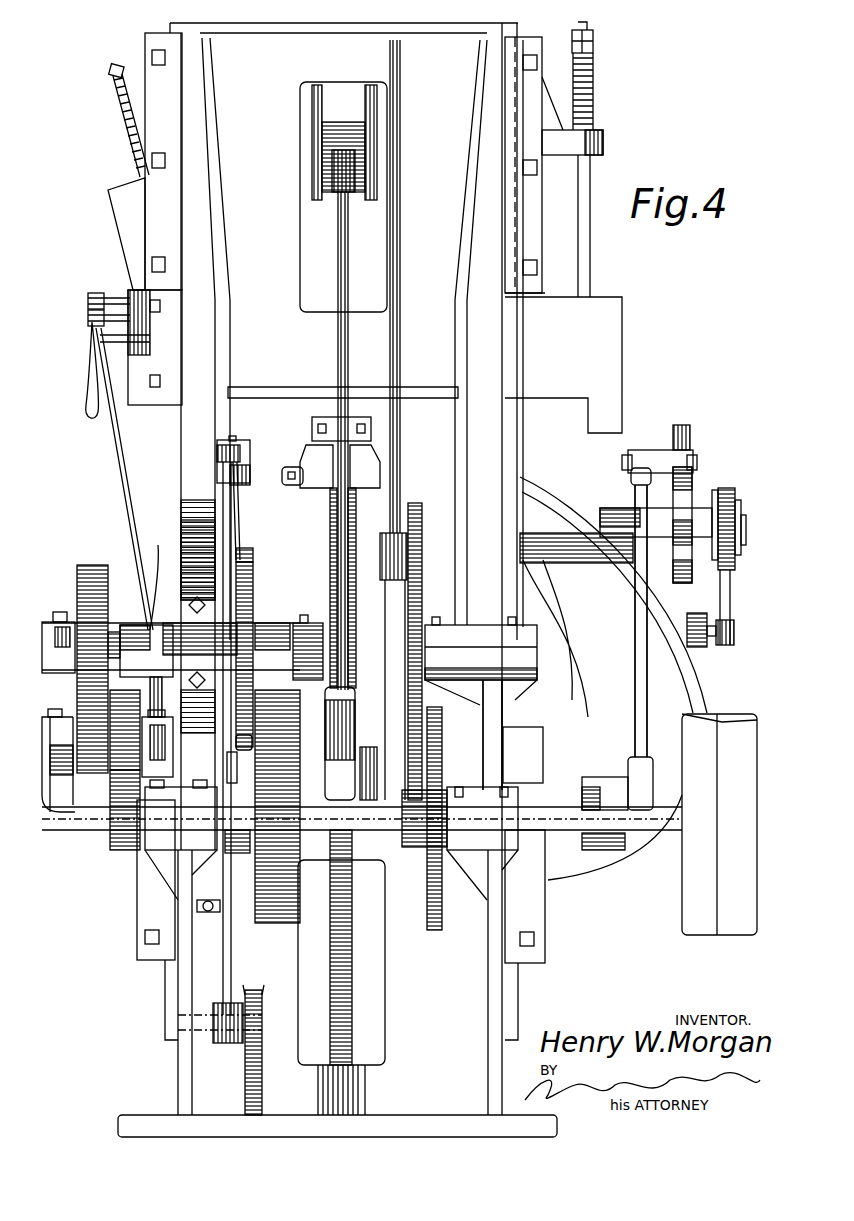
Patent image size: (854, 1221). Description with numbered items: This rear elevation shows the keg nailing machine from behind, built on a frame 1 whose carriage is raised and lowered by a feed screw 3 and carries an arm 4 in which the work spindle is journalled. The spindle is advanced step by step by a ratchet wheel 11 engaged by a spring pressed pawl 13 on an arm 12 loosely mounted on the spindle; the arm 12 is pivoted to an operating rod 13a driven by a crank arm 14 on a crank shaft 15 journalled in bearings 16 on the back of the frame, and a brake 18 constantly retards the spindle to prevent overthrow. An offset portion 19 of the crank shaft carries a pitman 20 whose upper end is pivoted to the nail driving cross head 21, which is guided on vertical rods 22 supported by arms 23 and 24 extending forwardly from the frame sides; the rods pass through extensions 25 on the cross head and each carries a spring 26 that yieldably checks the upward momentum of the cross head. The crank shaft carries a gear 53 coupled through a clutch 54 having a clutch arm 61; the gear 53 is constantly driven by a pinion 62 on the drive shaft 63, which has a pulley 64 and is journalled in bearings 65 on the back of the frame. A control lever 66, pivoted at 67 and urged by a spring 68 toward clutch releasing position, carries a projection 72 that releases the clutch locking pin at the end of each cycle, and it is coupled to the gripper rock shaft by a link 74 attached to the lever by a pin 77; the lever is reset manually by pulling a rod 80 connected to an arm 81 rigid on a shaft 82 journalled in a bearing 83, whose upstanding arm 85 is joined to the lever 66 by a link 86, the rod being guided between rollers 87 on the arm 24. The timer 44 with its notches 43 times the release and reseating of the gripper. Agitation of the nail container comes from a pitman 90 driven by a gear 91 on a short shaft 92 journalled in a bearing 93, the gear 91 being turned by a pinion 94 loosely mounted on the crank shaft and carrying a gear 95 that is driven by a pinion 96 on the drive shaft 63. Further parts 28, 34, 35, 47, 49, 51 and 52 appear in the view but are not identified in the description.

The frame 1 is at (492, 458).
The feed screw 3 is at (380, 1003).
The arm 4 is at (702, 702).
The ratchet wheel 11 is at (690, 496).
The arm 12 is at (662, 430).
The spring pressed pawl 13 is at (690, 463).
The operating rod 13a is at (648, 720).
The crank arm 14 is at (614, 786).
The crank shaft 15 is at (583, 790).
The bearings 16 is at (128, 632).
The brake 18 is at (97, 570).
The offset portion 19 is at (355, 745).
The pitman 20 is at (336, 355).
The nail driving cross head 21 is at (380, 182).
The vertical rods 22 is at (590, 188).
The arm 23 is at (622, 391).
The arm 24 is at (147, 407).
The extensions 25 is at (604, 150).
The spring 26 is at (596, 67).
The plate 28 is at (115, 225).
The nut 34 is at (113, 86).
The spring 35 is at (120, 117).
The notches 43 is at (255, 600).
The timer 44 is at (253, 575).
The hub 47 is at (195, 610).
The bracket 49 is at (82, 790).
The gear 51 is at (120, 792).
The gear 52 is at (125, 842).
The gear 53 is at (290, 926).
The clutch 54 is at (235, 856).
The clutch arm 61 is at (227, 770).
The pinion 62 is at (255, 870).
The drive shaft 63 is at (392, 832).
The pulley 64 is at (692, 894).
The bearings 65 is at (478, 862).
The lever 66 is at (233, 548).
The pivot 67 is at (218, 1040).
The spring 68 is at (208, 915).
The projection 72 is at (170, 897).
The link 74 is at (248, 463).
The pin 77 is at (236, 446).
The rod 80 is at (92, 380).
The arm 81 is at (118, 470).
The shaft 82 is at (157, 578).
The bearing 83 is at (198, 562).
The upstanding arm 85 is at (240, 522).
The link 86 is at (251, 484).
The rollers 87 is at (92, 295).
The pitman 90 is at (400, 336).
The gear 91 is at (418, 507).
The short shaft 92 is at (545, 658).
The bearing 93 is at (556, 694).
The pinion 94 is at (410, 852).
The gear 95 is at (442, 778).
The pinion 96 is at (445, 900).